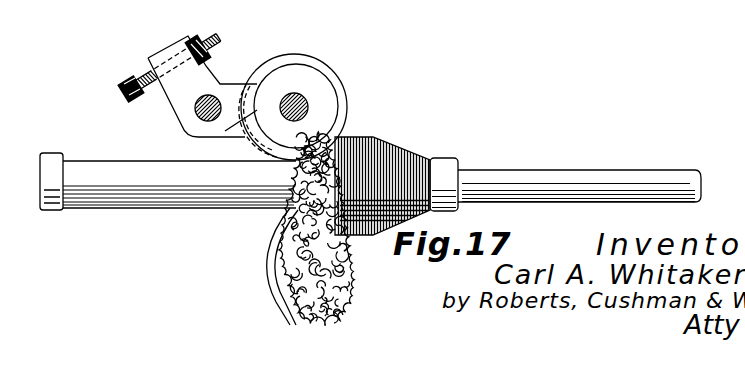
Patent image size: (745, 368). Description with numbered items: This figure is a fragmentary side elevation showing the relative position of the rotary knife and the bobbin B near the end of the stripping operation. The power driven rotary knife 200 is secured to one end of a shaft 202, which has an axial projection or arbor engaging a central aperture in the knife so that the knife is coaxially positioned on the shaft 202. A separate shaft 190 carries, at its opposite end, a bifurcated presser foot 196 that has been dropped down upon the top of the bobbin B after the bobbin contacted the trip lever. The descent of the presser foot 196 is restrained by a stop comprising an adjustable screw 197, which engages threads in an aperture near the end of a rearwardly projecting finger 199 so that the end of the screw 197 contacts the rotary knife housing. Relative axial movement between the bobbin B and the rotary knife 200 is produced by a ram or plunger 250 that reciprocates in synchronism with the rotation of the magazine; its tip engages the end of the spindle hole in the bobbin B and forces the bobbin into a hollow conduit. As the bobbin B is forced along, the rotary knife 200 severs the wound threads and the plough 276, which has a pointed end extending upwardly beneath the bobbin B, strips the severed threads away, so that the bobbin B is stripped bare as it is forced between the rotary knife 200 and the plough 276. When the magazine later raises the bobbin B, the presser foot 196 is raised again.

The bobbin B is at (76, 172).
The adjustable screw 197 is at (127, 78).
The shaft 190 is at (210, 98).
The bifurcated presser foot 196 is at (236, 80).
The rearwardly projecting finger 199 is at (178, 90).
The shaft 202 is at (301, 97).
The power driven rotary knife 200 is at (347, 110).
The ram or plunger 250 is at (556, 176).
The plough 276 is at (272, 278).